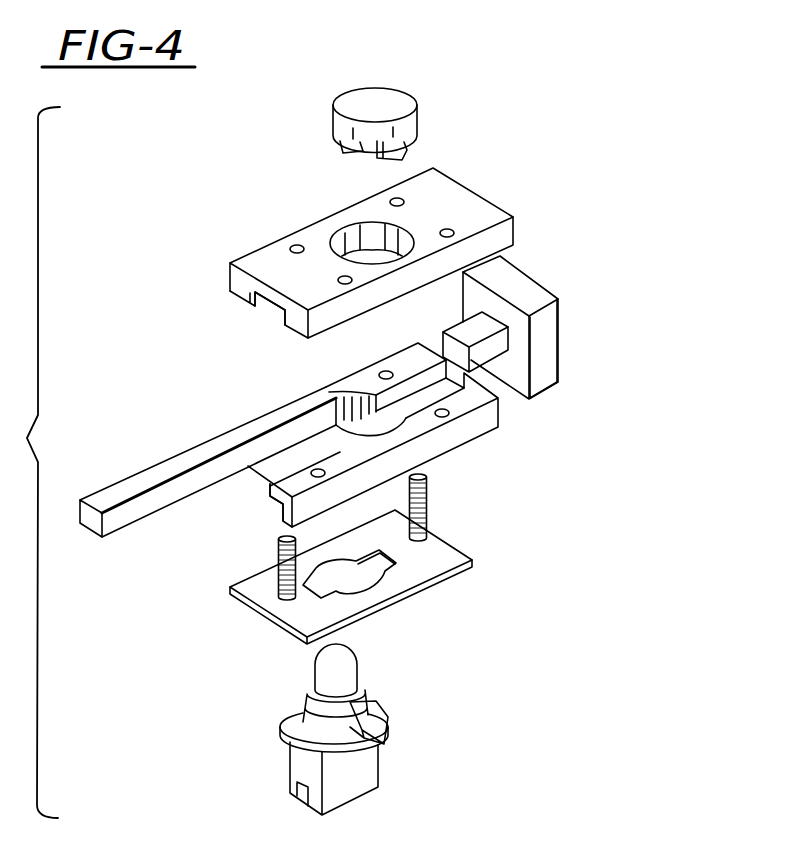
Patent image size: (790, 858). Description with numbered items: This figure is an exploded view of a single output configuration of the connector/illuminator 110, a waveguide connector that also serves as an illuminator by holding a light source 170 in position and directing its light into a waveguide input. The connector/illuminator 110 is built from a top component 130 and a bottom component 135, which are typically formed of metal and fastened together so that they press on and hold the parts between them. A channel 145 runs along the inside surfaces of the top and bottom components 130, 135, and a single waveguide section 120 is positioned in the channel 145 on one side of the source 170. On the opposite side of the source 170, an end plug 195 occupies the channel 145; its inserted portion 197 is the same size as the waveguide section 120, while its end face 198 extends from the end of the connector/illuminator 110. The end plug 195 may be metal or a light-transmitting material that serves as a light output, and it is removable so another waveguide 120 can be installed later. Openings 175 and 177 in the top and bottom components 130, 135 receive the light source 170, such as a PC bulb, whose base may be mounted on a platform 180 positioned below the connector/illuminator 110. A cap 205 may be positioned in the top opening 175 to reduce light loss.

The connector/illuminator 110 is at (240, 232).
The waveguide section 120 is at (152, 468).
The top component 130 is at (468, 207).
The bottom component 135 is at (478, 396).
The channel 145 is at (272, 311).
The light source 170 is at (379, 715).
The top opening 175 is at (367, 253).
The bottom opening 177 is at (355, 432).
The platform 180 is at (412, 562).
The end plug 195 is at (524, 278).
The inserted portion 197 is at (454, 314).
The end face 198 is at (560, 357).
The cap 205 is at (418, 118).